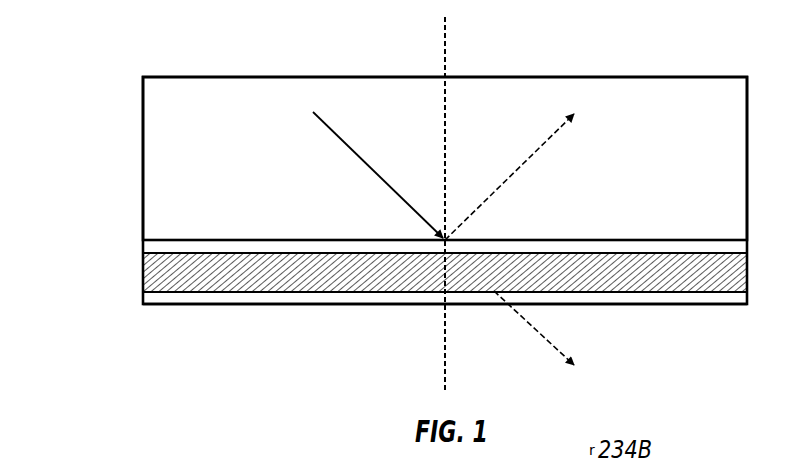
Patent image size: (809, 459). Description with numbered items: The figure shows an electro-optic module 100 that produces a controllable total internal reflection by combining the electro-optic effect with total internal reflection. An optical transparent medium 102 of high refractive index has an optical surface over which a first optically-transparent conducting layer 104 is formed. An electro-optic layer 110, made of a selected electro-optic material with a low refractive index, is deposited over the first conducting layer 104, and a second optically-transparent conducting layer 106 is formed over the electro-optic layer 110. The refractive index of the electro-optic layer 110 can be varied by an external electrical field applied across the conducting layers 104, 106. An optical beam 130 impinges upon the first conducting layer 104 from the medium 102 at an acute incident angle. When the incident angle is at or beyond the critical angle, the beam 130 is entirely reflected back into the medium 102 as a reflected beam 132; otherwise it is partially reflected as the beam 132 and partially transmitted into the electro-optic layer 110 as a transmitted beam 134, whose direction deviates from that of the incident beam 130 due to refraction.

The electro-optic module 100 is at (140, 65).
The optical transparent medium 102 is at (196, 120).
The first optically-transparent conducting layer 104 is at (416, 229).
The second optically-transparent conducting layer 106 is at (416, 281).
The electro-optic layer 110 is at (748, 272).
The optical beam 130 is at (350, 148).
The reflected beam 132 is at (541, 147).
The transmitted beam 134 is at (541, 334).